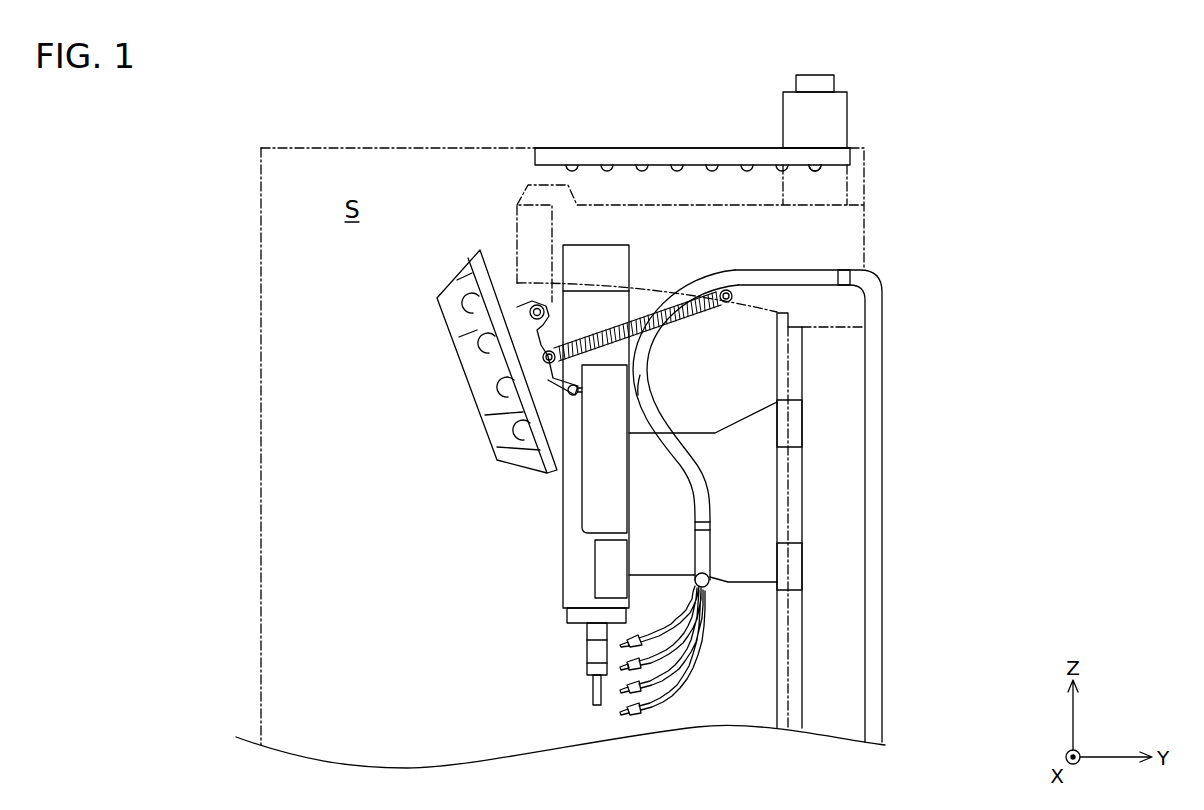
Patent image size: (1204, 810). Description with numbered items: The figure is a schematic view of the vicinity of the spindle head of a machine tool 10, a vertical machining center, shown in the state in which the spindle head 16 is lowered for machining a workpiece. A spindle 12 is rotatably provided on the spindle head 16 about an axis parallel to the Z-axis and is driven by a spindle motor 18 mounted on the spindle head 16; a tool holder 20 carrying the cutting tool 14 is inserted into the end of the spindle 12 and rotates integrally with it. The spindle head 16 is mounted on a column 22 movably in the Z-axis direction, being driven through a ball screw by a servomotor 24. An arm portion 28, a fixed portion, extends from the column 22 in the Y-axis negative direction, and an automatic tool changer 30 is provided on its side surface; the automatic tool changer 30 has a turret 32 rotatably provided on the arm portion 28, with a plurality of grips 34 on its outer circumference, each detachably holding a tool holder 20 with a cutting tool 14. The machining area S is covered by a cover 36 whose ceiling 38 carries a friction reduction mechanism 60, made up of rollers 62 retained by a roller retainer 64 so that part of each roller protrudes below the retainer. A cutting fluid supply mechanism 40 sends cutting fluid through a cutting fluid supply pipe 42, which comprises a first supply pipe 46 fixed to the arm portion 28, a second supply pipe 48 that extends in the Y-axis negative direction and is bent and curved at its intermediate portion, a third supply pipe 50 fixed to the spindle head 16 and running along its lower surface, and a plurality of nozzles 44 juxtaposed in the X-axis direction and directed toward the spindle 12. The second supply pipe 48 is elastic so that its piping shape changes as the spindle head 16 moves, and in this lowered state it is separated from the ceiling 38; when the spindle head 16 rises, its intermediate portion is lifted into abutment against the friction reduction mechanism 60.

The machine tool 10 is at (710, 375).
The spindle 12 is at (568, 616).
The cutting tool 14 is at (593, 688).
The spindle head 16 is at (550, 532).
The spindle motor 18 is at (593, 257).
The tool holder 20 is at (595, 650).
The column 22 is at (837, 505).
The servomotor 24 is at (795, 107).
The arm portion 28 is at (623, 205).
The automatic tool changer 30 is at (532, 361).
The turret 32 is at (475, 360).
The grips 34 is at (510, 383).
The cover 36 is at (257, 232).
The ceiling 38 is at (405, 152).
The cutting fluid supply mechanism 40 is at (850, 506).
The cutting fluid supply pipe 42 is at (907, 345).
The nozzles 44 is at (703, 662).
The first supply pipe 46 is at (873, 438).
The second supply pipe 48 is at (645, 423).
The third supply pipe 50 is at (703, 548).
The friction reduction mechanism 60 is at (689, 138).
The rollers 62 is at (815, 170).
The roller retainer 64 is at (842, 157).